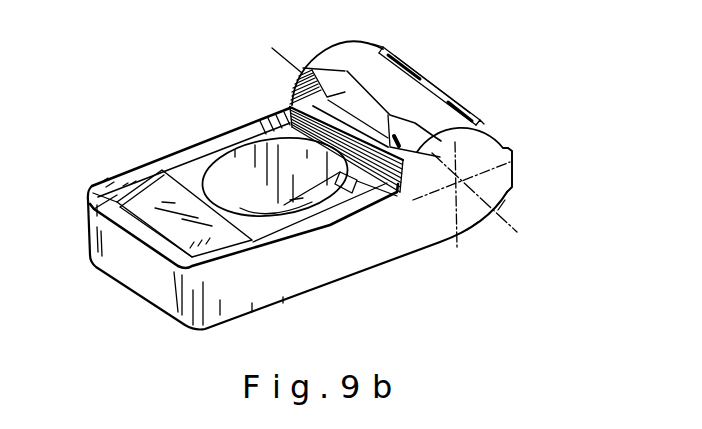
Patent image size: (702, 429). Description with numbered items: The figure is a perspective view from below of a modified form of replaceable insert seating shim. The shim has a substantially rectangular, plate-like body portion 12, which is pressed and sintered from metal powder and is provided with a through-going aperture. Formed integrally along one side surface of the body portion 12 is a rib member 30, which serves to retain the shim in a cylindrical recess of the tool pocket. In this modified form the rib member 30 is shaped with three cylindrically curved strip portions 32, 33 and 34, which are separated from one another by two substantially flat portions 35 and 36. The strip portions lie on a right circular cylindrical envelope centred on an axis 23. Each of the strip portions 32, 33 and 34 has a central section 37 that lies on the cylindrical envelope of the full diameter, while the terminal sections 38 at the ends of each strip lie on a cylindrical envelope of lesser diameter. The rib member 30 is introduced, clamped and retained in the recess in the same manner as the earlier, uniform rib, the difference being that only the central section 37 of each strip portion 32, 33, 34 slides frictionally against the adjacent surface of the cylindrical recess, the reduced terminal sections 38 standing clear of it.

The body portion 12 is at (346, 257).
The axis 23 is at (506, 226).
The rib member 30 is at (484, 149).
The cylindrical strip portion 32 is at (290, 103).
The cylindrical strip portion 33 is at (448, 97).
The cylindrical strip portion 34 is at (505, 200).
The flat portion 35 is at (347, 71).
The flat portion 36 is at (500, 173).
The central section 37 is at (434, 72).
The terminal sections 38 is at (380, 46).